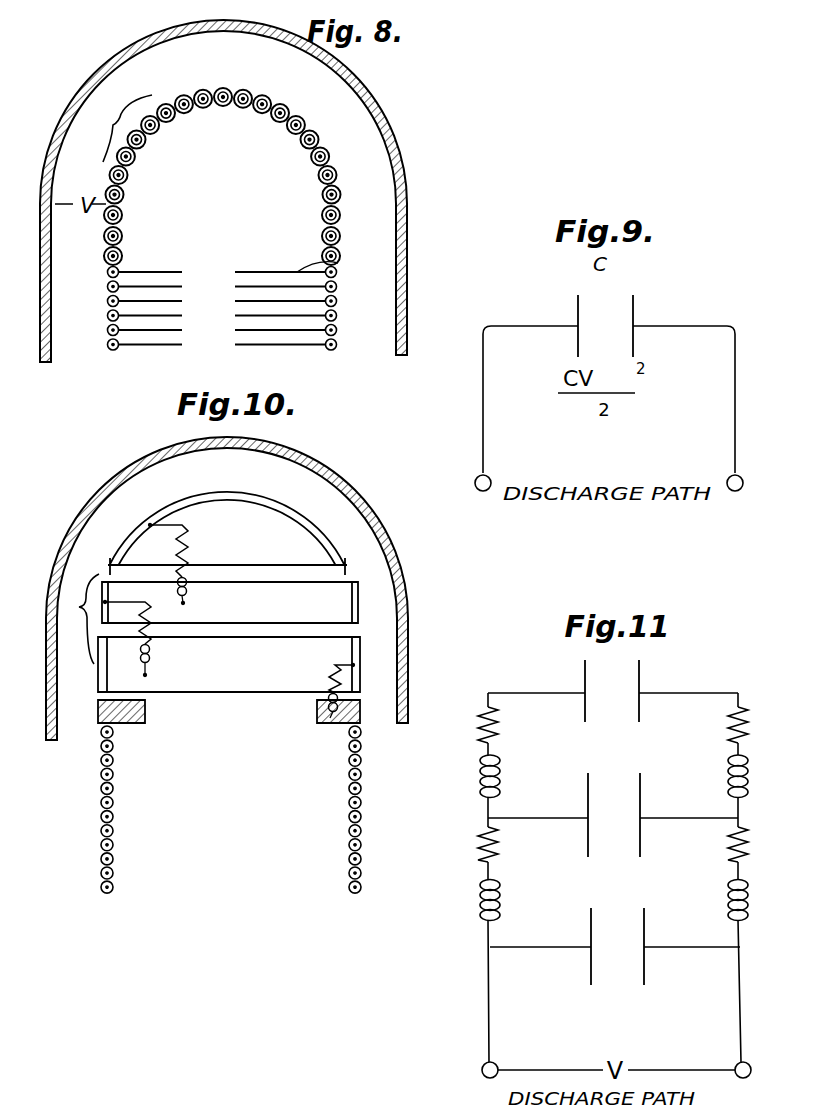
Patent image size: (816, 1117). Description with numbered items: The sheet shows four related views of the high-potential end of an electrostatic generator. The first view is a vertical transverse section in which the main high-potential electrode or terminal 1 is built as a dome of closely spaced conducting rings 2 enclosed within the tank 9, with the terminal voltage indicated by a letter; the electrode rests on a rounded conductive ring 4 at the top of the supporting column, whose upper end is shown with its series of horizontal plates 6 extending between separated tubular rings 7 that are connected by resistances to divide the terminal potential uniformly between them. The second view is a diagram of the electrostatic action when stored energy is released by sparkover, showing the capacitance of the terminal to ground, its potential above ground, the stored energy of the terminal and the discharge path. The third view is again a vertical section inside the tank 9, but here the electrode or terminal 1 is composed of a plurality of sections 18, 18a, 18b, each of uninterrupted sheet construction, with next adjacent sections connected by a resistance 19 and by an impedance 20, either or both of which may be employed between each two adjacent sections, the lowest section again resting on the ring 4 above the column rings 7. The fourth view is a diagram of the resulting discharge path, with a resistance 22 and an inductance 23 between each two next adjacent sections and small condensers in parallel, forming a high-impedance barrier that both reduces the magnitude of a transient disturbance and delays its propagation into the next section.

In FIG. 8, the main high-potential electrode or terminal 1 is at (127, 128).
In FIG. 10, the main high-potential electrode or terminal 1 is at (83, 619).
In FIG. 8, the rings 2 is at (209, 90).
In FIG. 10, the ring 4 is at (125, 725).
In FIG. 8, the horizontal plates 6 is at (326, 263).
In FIG. 8, the rings 7 is at (337, 300).
In FIG. 10, the rings 7 is at (100, 774).
In FIG. 8, the tank 9 is at (407, 155).
In FIG. 10, the tank 9 is at (407, 570).
In FIG. 10, the section 18 is at (242, 507).
In FIG. 10, the section 18a is at (280, 582).
In FIG. 10, the section 18b is at (297, 643).
In FIG. 10, the resistance 19 is at (188, 548).
In FIG. 10, the impedance 20 is at (188, 593).
In FIG. 11, the resistance 22 is at (507, 710).
In FIG. 11, the inductance 23 is at (507, 760).